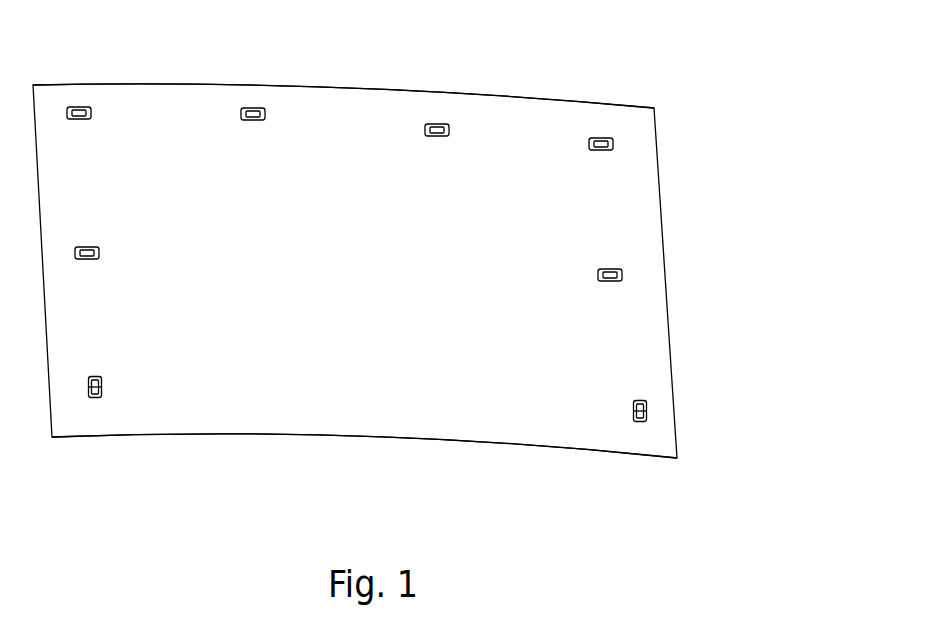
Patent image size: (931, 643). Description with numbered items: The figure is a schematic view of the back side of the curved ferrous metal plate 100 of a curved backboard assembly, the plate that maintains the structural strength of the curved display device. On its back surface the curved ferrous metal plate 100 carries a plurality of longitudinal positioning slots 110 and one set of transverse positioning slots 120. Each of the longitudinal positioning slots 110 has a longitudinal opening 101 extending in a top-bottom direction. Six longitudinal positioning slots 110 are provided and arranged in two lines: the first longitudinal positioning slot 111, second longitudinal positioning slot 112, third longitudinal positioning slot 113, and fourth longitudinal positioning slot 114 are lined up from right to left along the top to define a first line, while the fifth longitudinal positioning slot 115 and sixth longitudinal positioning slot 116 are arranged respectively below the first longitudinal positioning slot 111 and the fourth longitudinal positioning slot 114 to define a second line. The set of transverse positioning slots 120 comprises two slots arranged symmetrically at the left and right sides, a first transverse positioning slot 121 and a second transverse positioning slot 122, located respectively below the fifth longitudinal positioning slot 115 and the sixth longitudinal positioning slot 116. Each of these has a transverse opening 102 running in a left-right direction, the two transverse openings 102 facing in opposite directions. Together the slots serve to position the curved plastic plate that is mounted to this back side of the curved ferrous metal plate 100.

The curved ferrous metal plate 100 is at (407, 390).
The longitudinal opening 101 is at (437, 135).
The transverse opening 102 is at (633, 412).
The longitudinal positioning slots 110 is at (445, 144).
The first longitudinal positioning slot 111 is at (600, 138).
The second longitudinal positioning slot 112 is at (435, 124).
The third longitudinal positioning slot 113 is at (252, 107).
The fourth longitudinal positioning slot 114 is at (73, 107).
The fifth longitudinal positioning slot 115 is at (622, 273).
The sixth longitudinal positioning slot 116 is at (100, 252).
The transverse positioning slots 120 is at (479, 389).
The first transverse positioning slot 121 is at (646, 410).
The second transverse positioning slot 122 is at (102, 383).